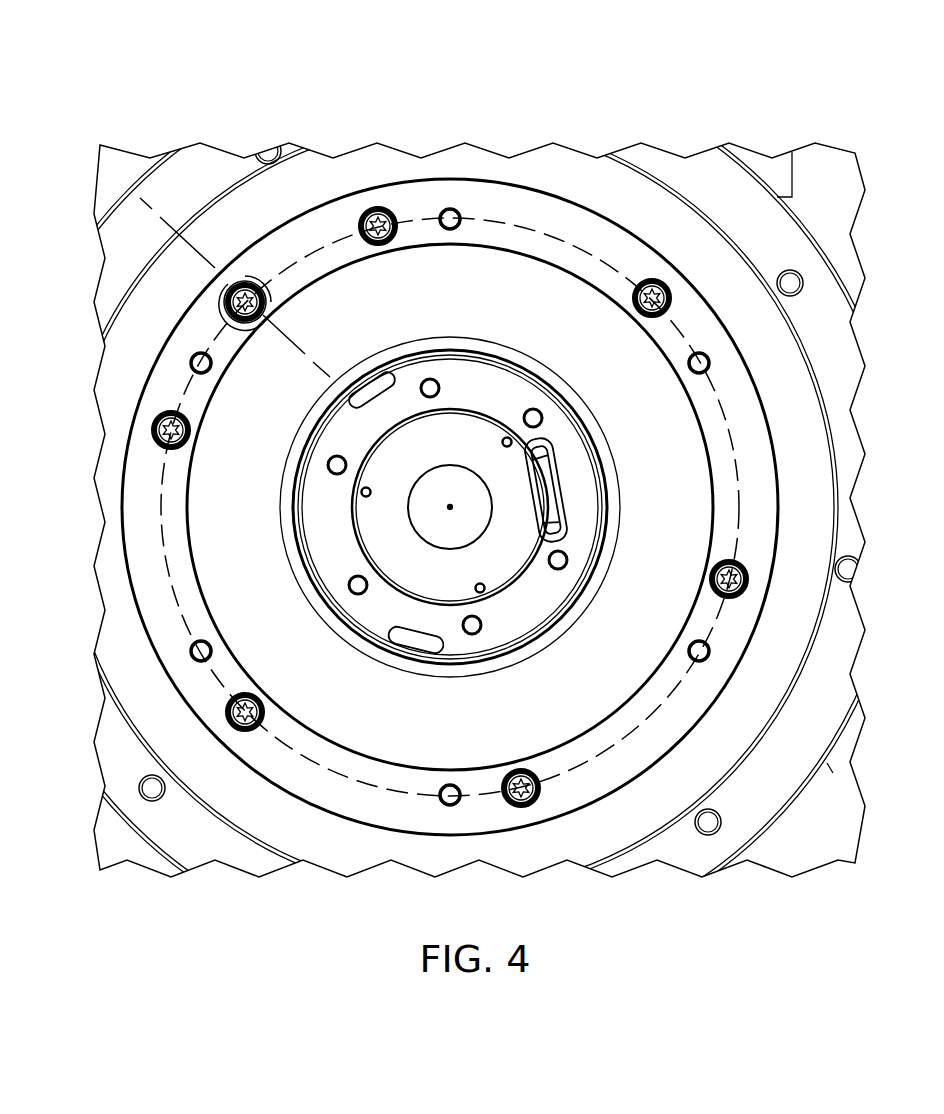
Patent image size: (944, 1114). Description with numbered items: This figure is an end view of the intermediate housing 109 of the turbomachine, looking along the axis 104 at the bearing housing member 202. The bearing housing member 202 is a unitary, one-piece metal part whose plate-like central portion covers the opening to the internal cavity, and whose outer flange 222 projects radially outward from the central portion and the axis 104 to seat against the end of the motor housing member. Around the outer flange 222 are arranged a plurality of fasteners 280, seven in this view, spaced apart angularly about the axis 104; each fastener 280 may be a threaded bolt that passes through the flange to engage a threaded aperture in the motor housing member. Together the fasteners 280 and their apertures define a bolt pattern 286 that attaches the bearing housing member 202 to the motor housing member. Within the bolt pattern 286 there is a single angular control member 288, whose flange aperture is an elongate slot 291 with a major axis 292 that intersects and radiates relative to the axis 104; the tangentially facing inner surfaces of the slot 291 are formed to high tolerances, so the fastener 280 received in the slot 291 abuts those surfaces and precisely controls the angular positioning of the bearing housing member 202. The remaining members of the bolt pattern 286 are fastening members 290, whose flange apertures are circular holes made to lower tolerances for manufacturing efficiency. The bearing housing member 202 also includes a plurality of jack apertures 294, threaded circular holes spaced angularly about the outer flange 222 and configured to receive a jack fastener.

The axis 104 is at (450, 506).
The intermediate housing 109 is at (479, 444).
The bearing housing member 202 is at (135, 549).
The outer flange 222 is at (297, 236).
The fastener 280 is at (371, 507).
The bolt pattern 286 is at (450, 451).
The angular control member 288 is at (245, 280).
The fastening member 290 is at (380, 245).
The elongate slot 291 is at (270, 312).
The major axis 292 is at (173, 224).
The jack aperture 294 is at (452, 230).